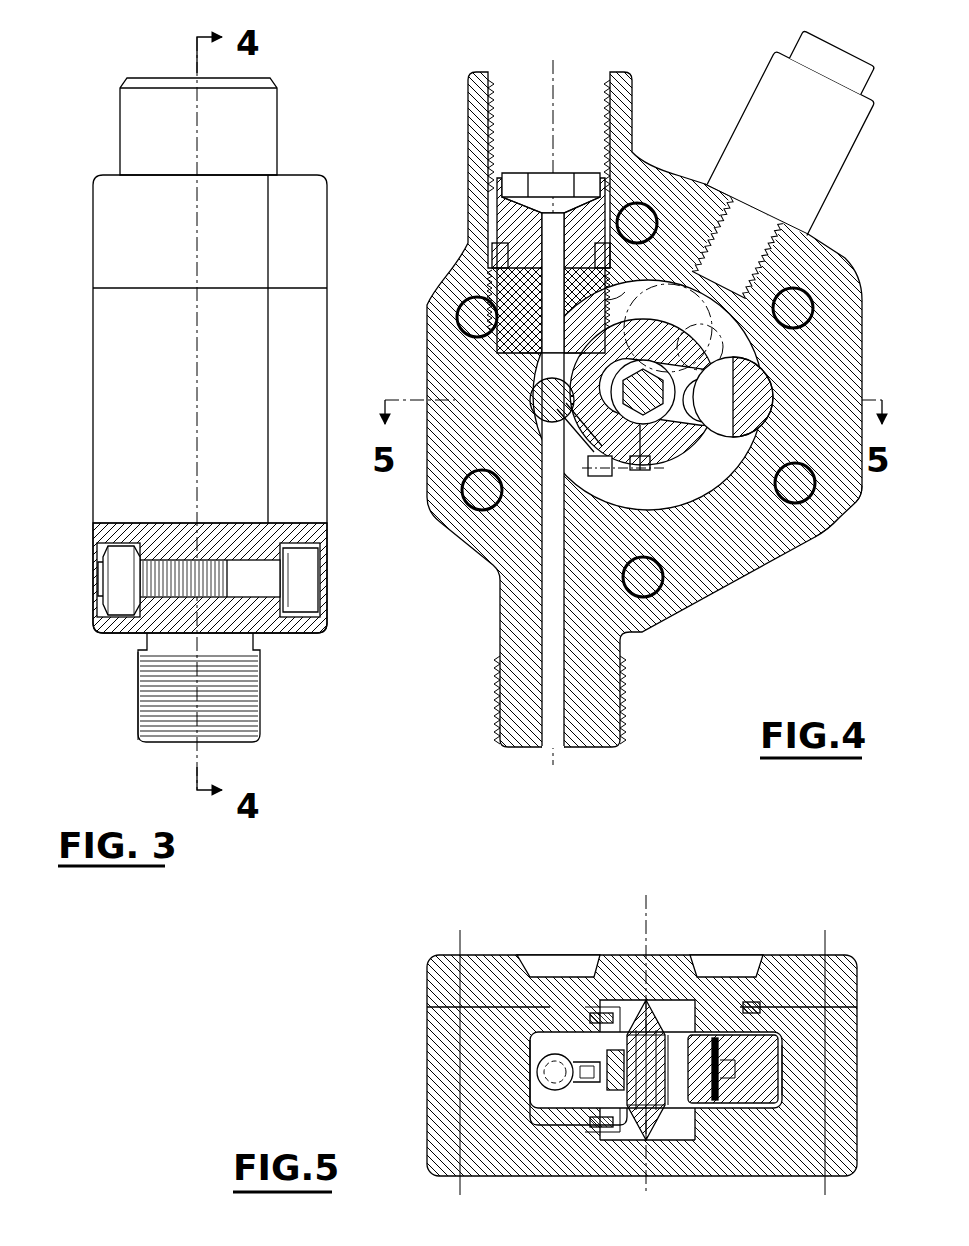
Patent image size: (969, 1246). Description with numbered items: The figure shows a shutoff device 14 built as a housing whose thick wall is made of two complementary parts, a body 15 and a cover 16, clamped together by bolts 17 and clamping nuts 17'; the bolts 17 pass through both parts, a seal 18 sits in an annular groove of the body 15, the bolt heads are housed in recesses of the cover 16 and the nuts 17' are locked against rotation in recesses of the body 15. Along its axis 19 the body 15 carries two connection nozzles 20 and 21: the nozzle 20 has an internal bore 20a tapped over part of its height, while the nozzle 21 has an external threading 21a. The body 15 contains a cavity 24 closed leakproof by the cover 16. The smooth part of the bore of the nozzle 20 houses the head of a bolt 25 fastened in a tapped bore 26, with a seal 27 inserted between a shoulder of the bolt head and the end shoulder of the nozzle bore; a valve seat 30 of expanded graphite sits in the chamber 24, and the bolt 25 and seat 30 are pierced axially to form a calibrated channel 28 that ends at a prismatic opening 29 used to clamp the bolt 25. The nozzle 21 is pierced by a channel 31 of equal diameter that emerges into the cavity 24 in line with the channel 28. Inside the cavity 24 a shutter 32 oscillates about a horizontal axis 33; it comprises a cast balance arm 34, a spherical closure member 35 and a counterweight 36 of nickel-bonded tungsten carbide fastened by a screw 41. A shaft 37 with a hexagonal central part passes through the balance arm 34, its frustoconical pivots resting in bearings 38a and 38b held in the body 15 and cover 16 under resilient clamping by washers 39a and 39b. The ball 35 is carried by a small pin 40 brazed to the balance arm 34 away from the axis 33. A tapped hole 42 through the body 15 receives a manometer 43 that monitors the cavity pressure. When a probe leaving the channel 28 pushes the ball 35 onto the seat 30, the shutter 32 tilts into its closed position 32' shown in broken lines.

In FIG. 3, the shutoff device 14 is at (86, 351).
In FIG. 4, the shutoff device 14 is at (748, 588).
In FIG. 5, the shutoff device 14 is at (503, 1185).
In FIG. 3, the body 15 is at (110, 422).
In FIG. 4, the body 15 is at (862, 470).
In FIG. 5, the body 15 is at (842, 1017).
In FIG. 3, the cover 16 is at (302, 190).
In FIG. 4, the cover 16 is at (636, 400).
In FIG. 5, the cover 16 is at (836, 966).
In FIG. 3, the bolts 17 is at (230, 569).
In FIG. 4, the bolts 17 is at (826, 549).
In FIG. 3, the clamping nuts 17' is at (90, 571).
In FIG. 5, the seal 18 is at (750, 1003).
In FIG. 3, the axis 19 is at (197, 232).
In FIG. 3, the connection nozzle 20 is at (135, 127).
In FIG. 4, the internal bore 20a is at (488, 165).
In FIG. 3, the connection nozzle 21 is at (150, 708).
In FIG. 4, the connection nozzle 21 is at (494, 712).
In FIG. 3, the external threading 21a is at (262, 706).
In FIG. 4, the external threading 21a is at (626, 718).
In FIG. 4, the cavity 24 is at (762, 352).
In FIG. 5, the cavity 24 is at (532, 1116).
In FIG. 4, the bolt 25 is at (518, 210).
In FIG. 4, the tapped bore 26 is at (600, 303).
In FIG. 4, the seal 27 is at (497, 258).
In FIG. 4, the channel 28 is at (550, 284).
In FIG. 4, the prismatic opening 29 is at (540, 182).
In FIG. 4, the valve seat 30 is at (523, 358).
In FIG. 4, the channel 31 is at (557, 678).
In FIG. 4, the shutter 32 is at (658, 483).
In FIG. 5, the shutter 32 is at (733, 1137).
In FIG. 4, the tilted position of shutter 32' is at (780, 234).
In FIG. 4, the horizontal axis 33 is at (668, 484).
In FIG. 5, the horizontal axis 33 is at (640, 922).
In FIG. 4, the balance arm 34 is at (702, 371).
In FIG. 5, the balance arm 34 is at (675, 1112).
In FIG. 4, the spherical closure member 35 is at (531, 400).
In FIG. 5, the spherical closure member 35 is at (562, 1079).
In FIG. 4, the counterweight 36 is at (740, 440).
In FIG. 5, the counterweight 36 is at (777, 1078).
In FIG. 4, the shaft 37 is at (661, 354).
In FIG. 5, the shaft 37 is at (530, 1040).
In FIG. 5, the bearing 38a is at (648, 1142).
In FIG. 5, the bearing 38b is at (612, 1012).
In FIG. 5, the resilient washer 39a is at (592, 1130).
In FIG. 5, the resilient washer 39b is at (583, 1010).
In FIG. 4, the pin 40 is at (552, 437).
In FIG. 5, the pin 40 is at (598, 1070).
In FIG. 5, the screw 41 is at (772, 1050).
In FIG. 4, the tapped hole 42 is at (681, 190).
In FIG. 4, the manometer 43 is at (756, 98).